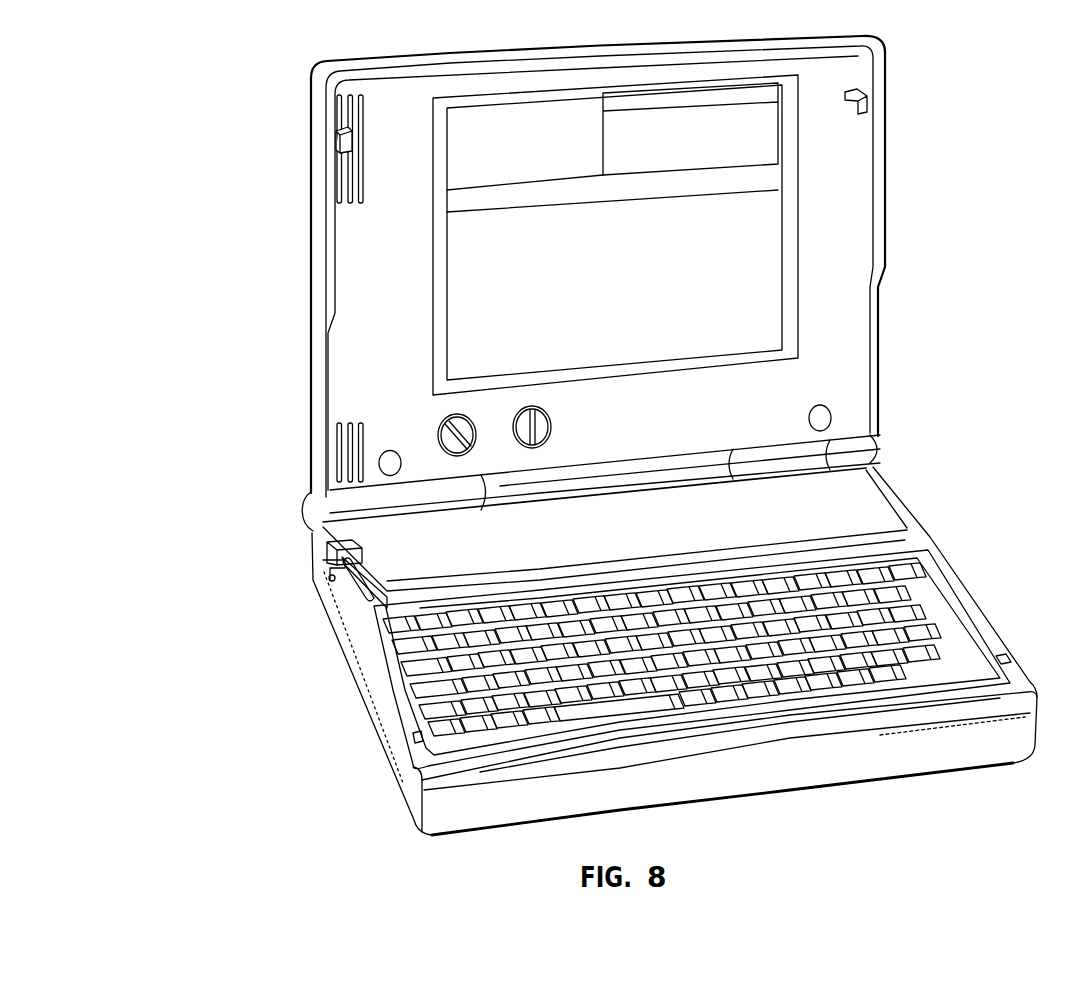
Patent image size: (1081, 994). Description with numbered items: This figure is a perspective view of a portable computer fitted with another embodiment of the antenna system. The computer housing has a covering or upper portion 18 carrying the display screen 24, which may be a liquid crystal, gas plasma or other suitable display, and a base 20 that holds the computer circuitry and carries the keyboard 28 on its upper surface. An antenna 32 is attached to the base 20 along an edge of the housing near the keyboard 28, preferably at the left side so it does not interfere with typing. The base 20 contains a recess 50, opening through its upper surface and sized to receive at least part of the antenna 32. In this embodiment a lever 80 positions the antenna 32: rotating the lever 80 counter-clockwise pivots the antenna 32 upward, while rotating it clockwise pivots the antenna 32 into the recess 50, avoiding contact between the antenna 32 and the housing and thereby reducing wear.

The upper portion 18 is at (627, 283).
The display screen 24 is at (753, 287).
The base 20 is at (636, 655).
The keyboard 28 is at (937, 630).
The lever 80 is at (330, 572).
The antenna 32 is at (358, 588).
The recess 50 is at (363, 608).